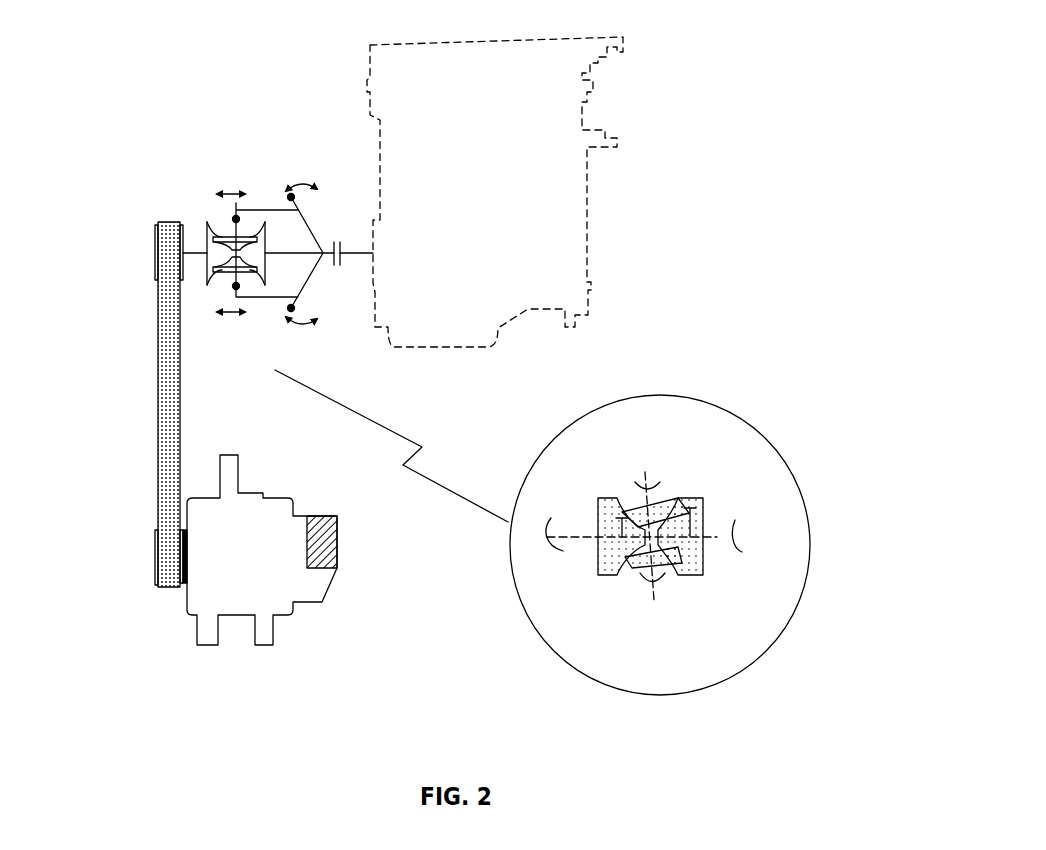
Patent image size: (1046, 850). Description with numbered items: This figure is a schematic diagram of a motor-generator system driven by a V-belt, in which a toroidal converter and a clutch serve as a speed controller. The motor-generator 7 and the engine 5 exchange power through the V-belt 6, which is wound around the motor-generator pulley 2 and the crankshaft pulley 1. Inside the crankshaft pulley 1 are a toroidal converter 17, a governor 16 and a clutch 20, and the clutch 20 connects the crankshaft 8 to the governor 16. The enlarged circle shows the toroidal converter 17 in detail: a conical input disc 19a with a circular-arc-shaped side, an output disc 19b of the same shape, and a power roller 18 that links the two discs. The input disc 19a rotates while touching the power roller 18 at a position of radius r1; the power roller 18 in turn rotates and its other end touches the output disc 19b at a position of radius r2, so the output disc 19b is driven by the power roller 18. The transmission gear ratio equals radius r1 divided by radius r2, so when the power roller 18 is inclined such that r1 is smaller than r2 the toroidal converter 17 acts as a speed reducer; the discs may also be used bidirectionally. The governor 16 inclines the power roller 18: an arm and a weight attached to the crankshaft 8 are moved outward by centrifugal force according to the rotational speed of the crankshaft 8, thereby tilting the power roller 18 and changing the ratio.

The crankshaft pulley 1 is at (155, 255).
The motor-generator pulley 2 is at (155, 553).
The engine 5 is at (542, 310).
The V-belt 6 is at (157, 383).
The motor-generator 7 is at (293, 610).
The crankshaft 8 is at (357, 250).
The governor 16 is at (289, 197).
The toroidal converter 17 is at (192, 158).
The power roller 18 is at (684, 495).
The input disc 19a is at (612, 576).
The output disc 19b is at (705, 508).
The clutch 20 is at (343, 263).
The radius r1 is at (598, 510).
The radius r2 is at (705, 520).